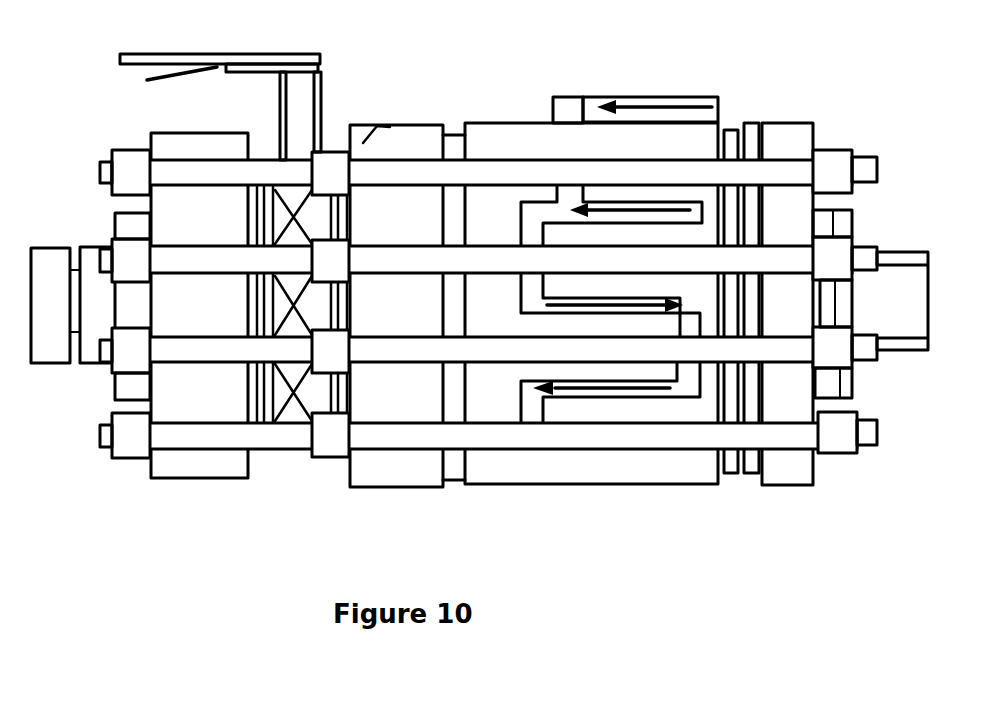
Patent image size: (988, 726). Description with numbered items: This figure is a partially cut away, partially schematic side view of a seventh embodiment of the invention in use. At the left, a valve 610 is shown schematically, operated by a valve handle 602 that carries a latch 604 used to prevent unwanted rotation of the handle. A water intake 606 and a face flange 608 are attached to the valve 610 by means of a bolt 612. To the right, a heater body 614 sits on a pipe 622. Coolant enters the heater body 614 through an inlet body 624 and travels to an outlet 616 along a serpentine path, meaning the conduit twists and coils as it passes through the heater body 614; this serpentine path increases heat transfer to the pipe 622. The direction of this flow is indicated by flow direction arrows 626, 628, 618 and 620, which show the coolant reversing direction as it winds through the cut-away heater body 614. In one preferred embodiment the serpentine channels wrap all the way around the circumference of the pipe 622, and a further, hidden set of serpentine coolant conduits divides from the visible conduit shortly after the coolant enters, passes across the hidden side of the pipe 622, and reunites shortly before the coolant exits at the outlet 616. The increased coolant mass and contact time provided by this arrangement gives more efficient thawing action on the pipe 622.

The valve handle 602 is at (224, 53).
The latch 604 is at (189, 77).
The water intake 606 is at (44, 366).
The face flange 608 is at (200, 480).
The valve 610 is at (296, 403).
The bolt 612 is at (333, 458).
The heater body 614 is at (372, 488).
The outlet 616 is at (535, 485).
The flow direction arrow 618 is at (588, 305).
The flow direction arrow 620 is at (648, 385).
The pipe 622 is at (905, 362).
The inlet body 624 is at (630, 96).
The flow direction arrow 626 is at (697, 97).
The flow direction arrow 628 is at (657, 210).